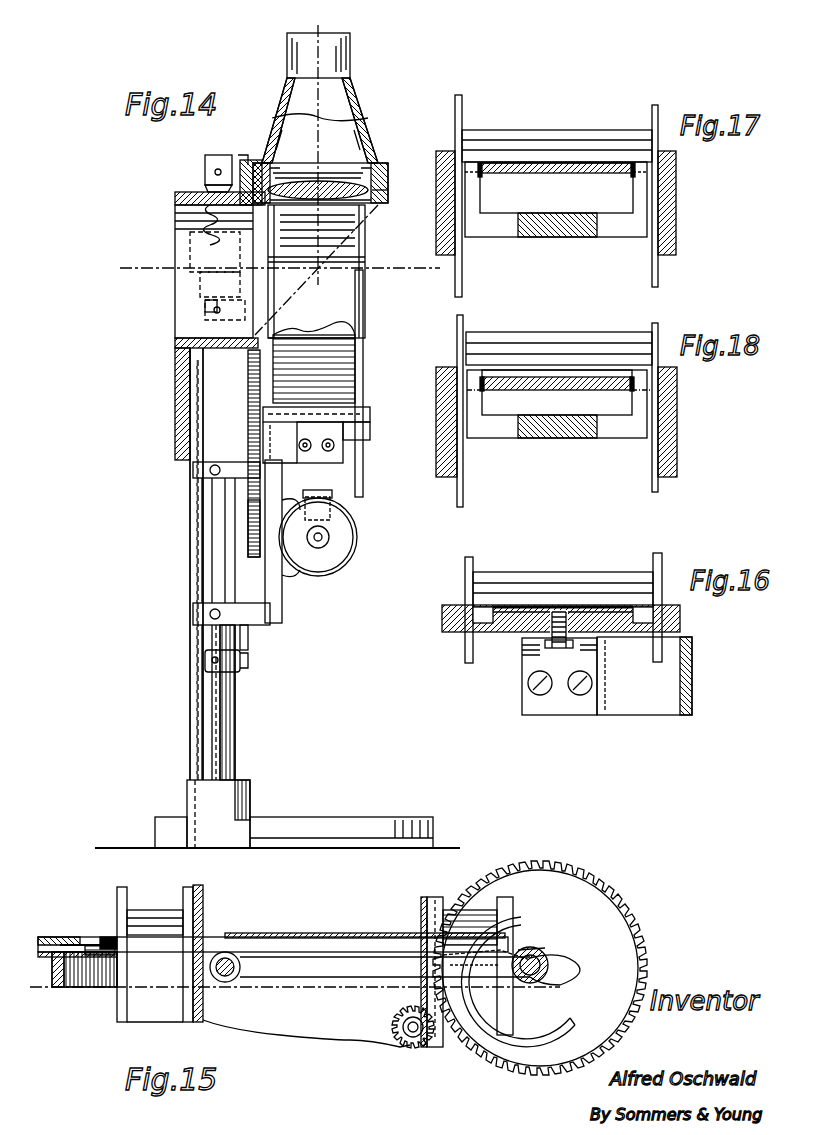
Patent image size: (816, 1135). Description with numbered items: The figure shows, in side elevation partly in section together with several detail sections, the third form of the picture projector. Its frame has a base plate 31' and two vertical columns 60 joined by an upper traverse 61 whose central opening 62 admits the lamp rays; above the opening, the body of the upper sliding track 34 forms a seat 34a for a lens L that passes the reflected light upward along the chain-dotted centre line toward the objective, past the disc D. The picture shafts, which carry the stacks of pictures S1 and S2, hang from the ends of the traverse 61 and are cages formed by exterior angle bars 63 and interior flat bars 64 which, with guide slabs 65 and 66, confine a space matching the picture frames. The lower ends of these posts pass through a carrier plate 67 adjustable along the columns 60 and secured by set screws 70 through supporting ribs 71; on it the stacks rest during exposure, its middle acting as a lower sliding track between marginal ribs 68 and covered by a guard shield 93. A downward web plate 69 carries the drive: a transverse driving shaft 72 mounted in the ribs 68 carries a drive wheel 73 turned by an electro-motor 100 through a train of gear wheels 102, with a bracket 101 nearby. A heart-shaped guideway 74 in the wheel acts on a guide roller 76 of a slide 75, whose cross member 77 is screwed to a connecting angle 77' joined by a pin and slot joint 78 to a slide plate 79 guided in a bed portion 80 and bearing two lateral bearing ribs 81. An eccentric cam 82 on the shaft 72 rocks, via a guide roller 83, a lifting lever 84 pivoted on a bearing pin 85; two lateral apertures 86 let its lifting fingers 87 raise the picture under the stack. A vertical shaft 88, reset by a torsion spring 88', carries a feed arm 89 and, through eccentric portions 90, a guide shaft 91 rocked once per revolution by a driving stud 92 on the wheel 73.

In FIG. 14, the base plate 31' is at (277, 814).
In FIG. 14, the upper sliding track 34 is at (385, 175).
In FIG. 14, the seat for lens 34a is at (390, 188).
In FIG. 14, the disc D is at (308, 172).
In FIG. 15, the disc D is at (262, 937).
In FIG. 14, the lens L is at (312, 200).
In FIG. 14, the stack of pictures S1 is at (363, 310).
In FIG. 17, the stack of pictures S1 is at (578, 135).
In FIG. 18, the stack of pictures S1 is at (575, 336).
In FIG. 15, the stack of pictures S1 is at (450, 905).
In FIG. 14, the stack of pictures S2 is at (340, 357).
In FIG. 16, the stack of pictures S2 is at (565, 575).
In FIG. 15, the stack of pictures S2 is at (155, 910).
In FIG. 14, the vertical columns 60 is at (190, 355).
In FIG. 14, the upper traverse 61 is at (190, 245).
In FIG. 14, the central opening 62 is at (190, 335).
In FIG. 14, the angle bars 63 is at (280, 340).
In FIG. 16, the angle bars 63 is at (657, 553).
In FIG. 15, the angle bars 63 is at (110, 1003).
In FIG. 17, the flat bars 64 is at (462, 275).
In FIG. 18, the flat bars 64 is at (463, 493).
In FIG. 15, the flat bars 64 is at (175, 1003).
In FIG. 14, the guide slab 65 is at (363, 292).
In FIG. 15, the guide slab 65 is at (203, 900).
In FIG. 14, the guide slab 66 is at (345, 230).
In FIG. 14, the carrier plate 67 is at (370, 435).
In FIG. 17, the carrier plate 67 is at (560, 175).
In FIG. 18, the carrier plate 67 is at (577, 380).
In FIG. 16, the carrier plate 67 is at (442, 618).
In FIG. 15, the carrier plate 67 is at (45, 957).
In FIG. 14, the longitudinal marginal ribs 68 is at (370, 420).
In FIG. 17, the longitudinal marginal ribs 68 is at (676, 210).
In FIG. 18, the longitudinal marginal ribs 68 is at (677, 448).
In FIG. 14, the web plate 69 is at (282, 590).
In FIG. 15, the web plate 69 is at (312, 1035).
In FIG. 14, the set screws 70 is at (205, 478).
In FIG. 14, the supporting ribs 71 is at (193, 475).
In FIG. 15, the transverse driving shaft 72 is at (530, 983).
In FIG. 14, the drive wheel 73 is at (250, 558).
In FIG. 15, the drive wheel 73 is at (610, 915).
In FIG. 15, the heart-shaped guideway 74 is at (470, 1050).
In FIG. 14, the slide 75 is at (285, 463).
In FIG. 16, the slide 75 is at (692, 668).
In FIG. 15, the slide 75 is at (135, 995).
In FIG. 15, the guide roller 76 is at (425, 920).
In FIG. 14, the cross member 77 is at (346, 453).
In FIG. 16, the cross member 77 is at (644, 693).
In FIG. 15, the cross member 77 is at (71, 982).
In FIG. 16, the connecting angle 77' is at (559, 693).
In FIG. 15, the connecting angle 77' is at (82, 989).
In FIG. 16, the pin and slot joint 78 is at (535, 652).
In FIG. 15, the pin and slot joint 78 is at (92, 945).
In FIG. 16, the slide plate 79 is at (590, 605).
In FIG. 15, the slide plate 79 is at (65, 945).
In FIG. 16, the bed portion 80 is at (515, 605).
In FIG. 15, the bed portion 80 is at (45, 937).
In FIG. 16, the lateral bearing ribs 81 is at (482, 605).
In FIG. 15, the lateral bearing ribs 81 is at (108, 935).
In FIG. 15, the eccentric cam 82 is at (540, 960).
In FIG. 15, the guide roller 83 is at (530, 950).
In FIG. 17, the lifting lever 84 is at (555, 235).
In FIG. 18, the lifting lever 84 is at (553, 437).
In FIG. 15, the lifting lever 84 is at (320, 965).
In FIG. 15, the bearing pin 85 is at (225, 982).
In FIG. 17, the lateral apertures 86 is at (503, 165).
In FIG. 18, the lateral apertures 86 is at (632, 388).
In FIG. 17, the lifting fingers 87 is at (480, 190).
In FIG. 18, the lifting fingers 87 is at (482, 398).
In FIG. 15, the lifting fingers 87 is at (470, 960).
In FIG. 14, the vertical shaft 88 is at (218, 163).
In FIG. 14, the torsion spring 88' is at (196, 204).
In FIG. 14, the feed arm 89 is at (250, 158).
In FIG. 14, the eccentric portions 90 is at (205, 303).
In FIG. 14, the guide shaft 91 is at (248, 640).
In FIG. 14, the driving member 92 is at (248, 392).
In FIG. 14, the guard shield 93 is at (345, 412).
In FIG. 15, the guard shield 93 is at (320, 933).
In FIG. 14, the electro-motor 100 is at (357, 537).
In FIG. 14, the bracket 101 is at (330, 478).
In FIG. 14, the train of gear wheels 102 is at (248, 503).
In FIG. 15, the train of gear wheels 102 is at (425, 1050).